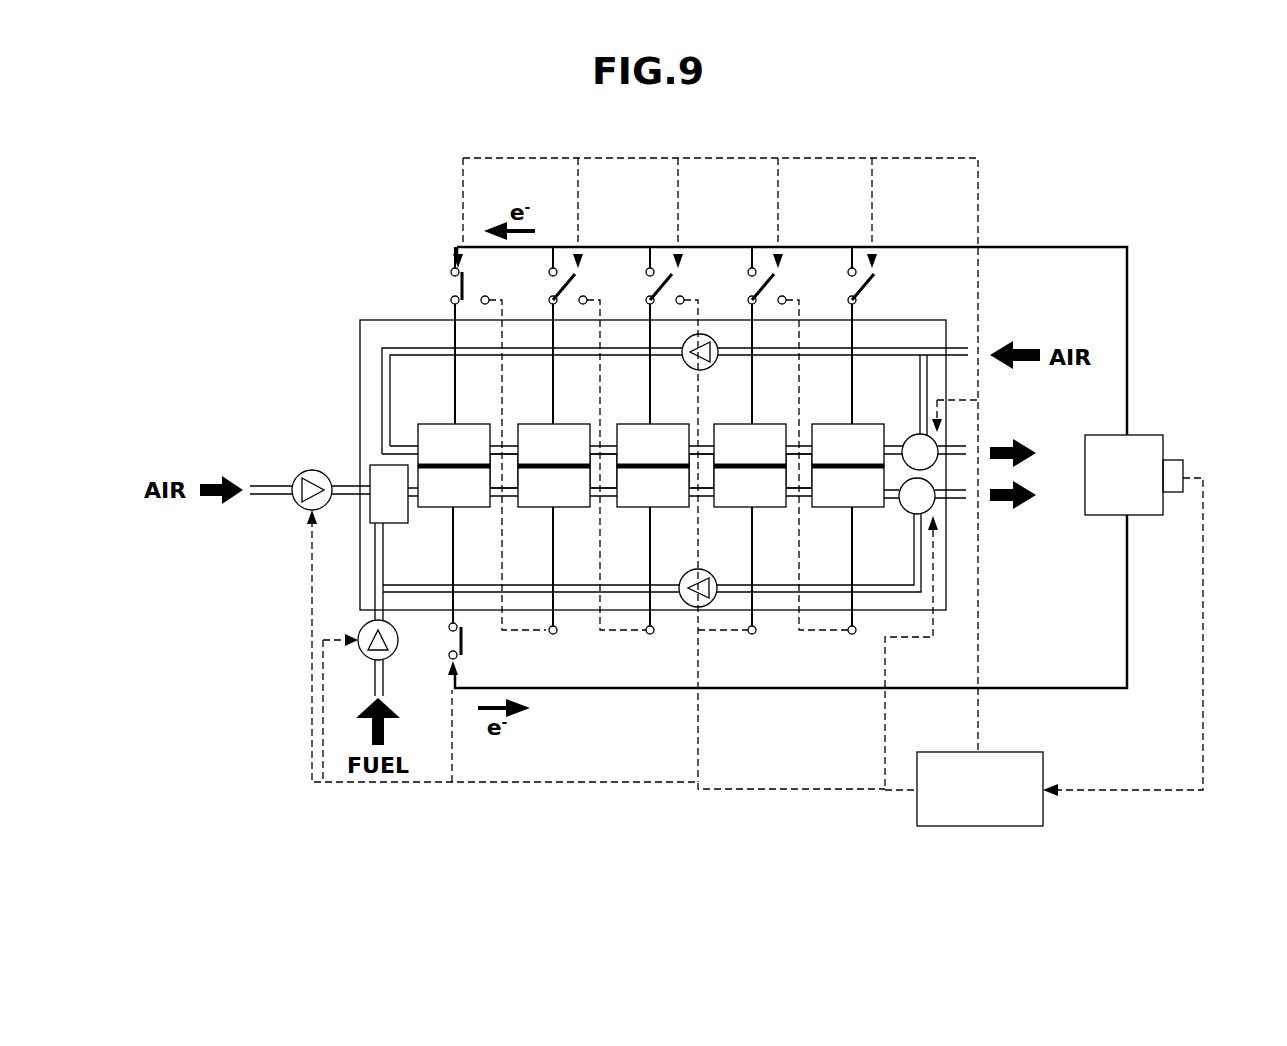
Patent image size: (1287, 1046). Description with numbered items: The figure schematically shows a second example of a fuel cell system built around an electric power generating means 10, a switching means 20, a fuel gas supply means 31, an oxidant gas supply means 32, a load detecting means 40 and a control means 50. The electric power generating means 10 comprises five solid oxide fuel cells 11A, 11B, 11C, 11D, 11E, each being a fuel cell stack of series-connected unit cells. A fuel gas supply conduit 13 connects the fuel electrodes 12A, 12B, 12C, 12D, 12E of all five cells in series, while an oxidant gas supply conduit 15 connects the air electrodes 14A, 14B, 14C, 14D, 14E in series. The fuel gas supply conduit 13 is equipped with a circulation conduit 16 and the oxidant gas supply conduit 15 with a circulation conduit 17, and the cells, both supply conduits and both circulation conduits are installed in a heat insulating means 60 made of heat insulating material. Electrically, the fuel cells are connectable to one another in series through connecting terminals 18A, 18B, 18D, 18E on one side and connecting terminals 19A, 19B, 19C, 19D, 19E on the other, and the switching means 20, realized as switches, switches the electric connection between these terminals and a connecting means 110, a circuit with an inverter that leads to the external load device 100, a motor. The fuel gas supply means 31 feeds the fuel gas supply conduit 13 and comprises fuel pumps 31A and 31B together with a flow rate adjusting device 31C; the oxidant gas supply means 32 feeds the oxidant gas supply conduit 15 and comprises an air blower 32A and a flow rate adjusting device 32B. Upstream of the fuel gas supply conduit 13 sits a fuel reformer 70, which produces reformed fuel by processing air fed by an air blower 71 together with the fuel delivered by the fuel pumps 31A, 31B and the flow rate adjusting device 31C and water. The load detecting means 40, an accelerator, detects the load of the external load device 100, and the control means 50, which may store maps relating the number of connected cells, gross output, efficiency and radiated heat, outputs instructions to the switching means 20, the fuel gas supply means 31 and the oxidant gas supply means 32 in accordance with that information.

The electric power generating means 10 is at (372, 362).
The solid oxide fuel cell 11A is at (443, 473).
The solid oxide fuel cell 11B is at (548, 473).
The solid oxide fuel cell 11C is at (647, 473).
The solid oxide fuel cell 11D is at (749, 473).
The solid oxide fuel cell 11E is at (851, 473).
The fuel electrode 12A is at (433, 500).
The fuel electrode 12B is at (533, 500).
The fuel electrode 12C is at (632, 500).
The fuel electrode 12D is at (730, 500).
The fuel electrode 12E is at (828, 500).
The fuel gas supply conduit 13 is at (376, 551).
The air electrode 14A is at (437, 437).
The air electrode 14B is at (540, 437).
The air electrode 14C is at (640, 437).
The air electrode 14D is at (735, 437).
The air electrode 14E is at (835, 437).
The oxidant gas supply conduit 15 is at (386, 400).
The circulation conduit 16 is at (425, 583).
The circulation conduit 17 is at (928, 380).
The connecting terminal 18A is at (458, 613).
The connecting terminal 18B is at (553, 621).
The connecting terminal 18D is at (753, 621).
The connecting terminal 18E is at (852, 621).
The connecting terminal 19A is at (453, 312).
The connecting terminal 19B is at (557, 312).
The connecting terminal 19C is at (657, 312).
The connecting terminal 19D is at (757, 315).
The connecting terminal 19E is at (856, 316).
The switching means 20 is at (458, 284).
The fuel gas supply means 31 is at (352, 679).
The fuel pump 31A is at (397, 657).
The fuel pump 31B is at (713, 600).
The flow rate adjusting device 31C is at (937, 509).
The oxidant gas supply means 32 is at (759, 269).
The air blower 32A is at (720, 341).
The flow rate adjusting device 32B is at (945, 443).
The load detecting means 40 is at (1187, 468).
The control means 50 is at (985, 826).
The heat insulating means 60 is at (380, 326).
The fuel reformer 70 is at (378, 472).
The air blower 71 is at (312, 474).
The external load device 100 is at (1147, 447).
The connecting means 110 is at (1128, 300).